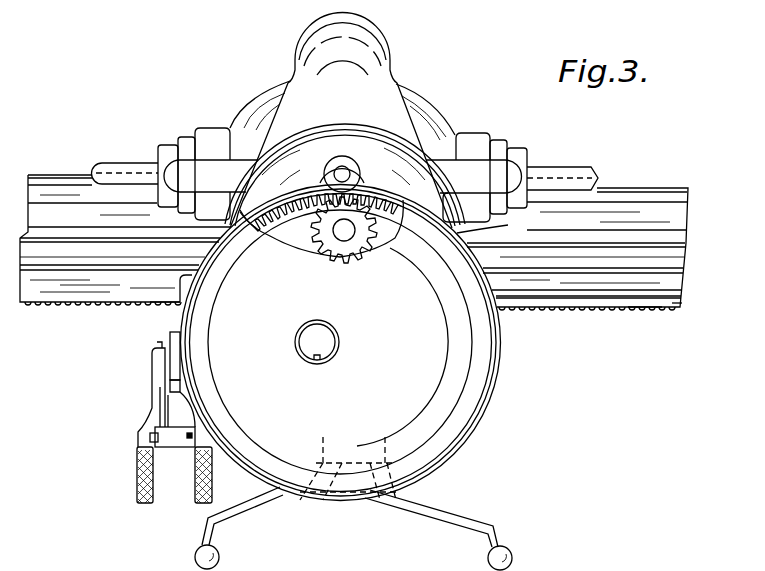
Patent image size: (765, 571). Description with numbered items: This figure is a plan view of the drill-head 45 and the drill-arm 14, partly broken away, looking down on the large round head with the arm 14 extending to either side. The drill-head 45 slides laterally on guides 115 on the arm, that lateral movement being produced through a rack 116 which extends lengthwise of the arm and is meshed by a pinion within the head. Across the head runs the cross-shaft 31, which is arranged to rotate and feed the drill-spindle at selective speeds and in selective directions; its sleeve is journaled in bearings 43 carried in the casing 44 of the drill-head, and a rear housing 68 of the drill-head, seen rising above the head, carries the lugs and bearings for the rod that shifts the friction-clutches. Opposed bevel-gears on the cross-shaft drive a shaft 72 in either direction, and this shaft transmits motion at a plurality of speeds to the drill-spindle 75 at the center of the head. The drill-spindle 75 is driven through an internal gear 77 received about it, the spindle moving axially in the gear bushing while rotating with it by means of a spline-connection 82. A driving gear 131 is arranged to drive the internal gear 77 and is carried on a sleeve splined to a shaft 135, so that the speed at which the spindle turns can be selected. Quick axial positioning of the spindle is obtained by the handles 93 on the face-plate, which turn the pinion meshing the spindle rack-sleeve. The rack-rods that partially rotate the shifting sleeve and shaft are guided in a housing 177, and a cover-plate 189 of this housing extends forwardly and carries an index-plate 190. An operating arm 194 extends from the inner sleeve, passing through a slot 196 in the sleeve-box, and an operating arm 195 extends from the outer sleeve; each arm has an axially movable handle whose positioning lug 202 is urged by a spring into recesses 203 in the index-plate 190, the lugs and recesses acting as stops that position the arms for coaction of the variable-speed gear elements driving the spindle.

The frame bed 14 is at (643, 195).
The cross-shaft 31 is at (568, 172).
The bearings 43 is at (210, 147).
The casing 44 is at (499, 221).
The drill-head 45 is at (498, 415).
The rear housing 68 is at (391, 50).
The shaft 72 is at (342, 174).
The drill-spindle 75 is at (323, 333).
The internal gear 77 is at (293, 210).
The spline-connection 82 is at (320, 362).
The handles 93 is at (244, 520).
The guides 115 is at (675, 304).
The rack 116 is at (638, 311).
The driving gear 131 is at (327, 236).
The shaft 135 is at (347, 238).
The housing 177 is at (180, 296).
The cover-plate 189 is at (168, 360).
The index-plate 190 is at (175, 447).
The operating arm 194 is at (134, 502).
The operating arm 195 is at (195, 503).
The slot 196 is at (166, 398).
The positioning lug 202 is at (152, 437).
The recesses 203 is at (193, 431).